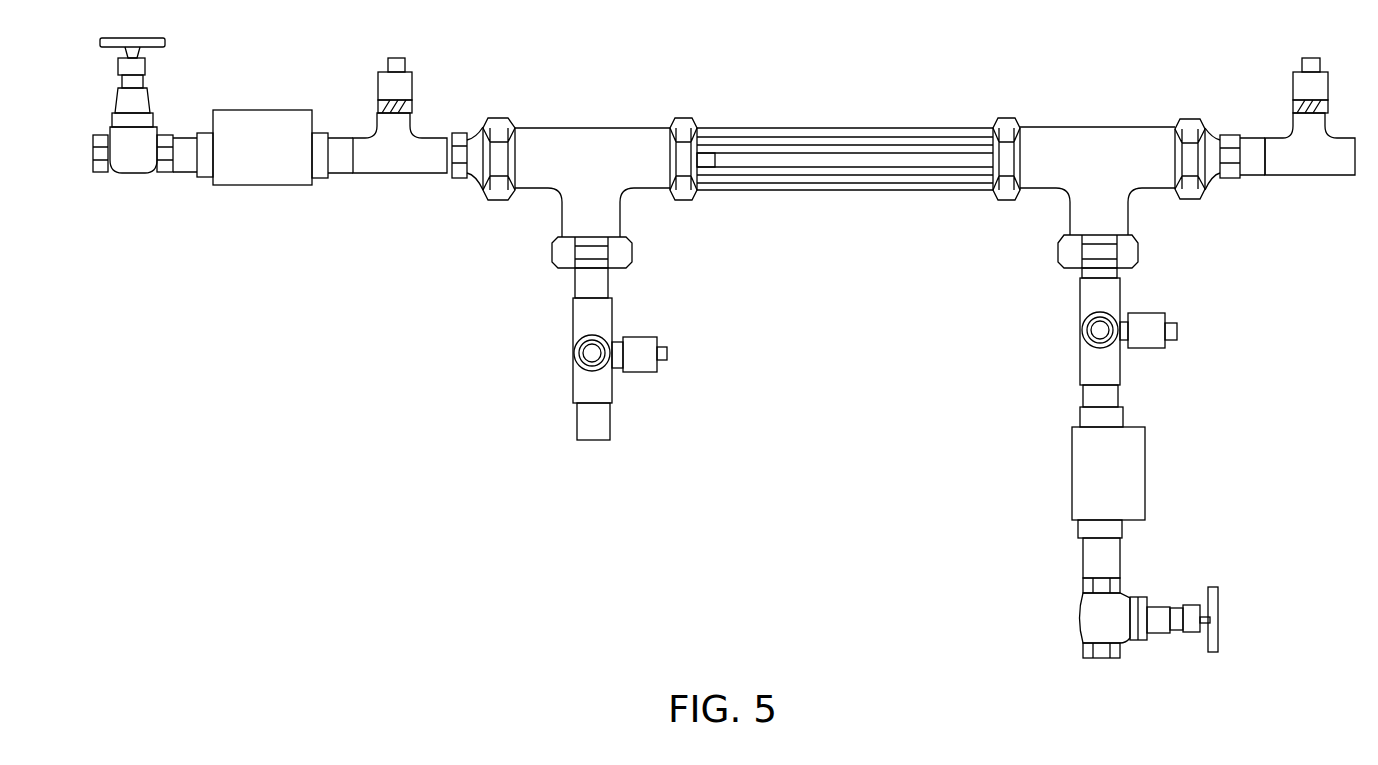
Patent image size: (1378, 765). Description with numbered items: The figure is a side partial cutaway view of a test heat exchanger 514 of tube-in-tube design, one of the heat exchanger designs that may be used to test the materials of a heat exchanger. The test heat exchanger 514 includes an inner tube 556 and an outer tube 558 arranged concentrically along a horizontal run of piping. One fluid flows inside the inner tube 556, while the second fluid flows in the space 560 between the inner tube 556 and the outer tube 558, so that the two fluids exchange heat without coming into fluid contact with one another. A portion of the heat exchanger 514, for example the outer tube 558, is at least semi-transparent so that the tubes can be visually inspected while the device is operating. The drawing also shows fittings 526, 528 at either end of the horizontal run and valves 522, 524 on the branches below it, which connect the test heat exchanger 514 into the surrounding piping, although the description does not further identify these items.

The test heat exchanger 514 is at (1007, 98).
The second needle valve 522 is at (1095, 270).
The first needle valve 524 is at (595, 278).
The first union fitting 526 is at (431, 147).
The second union fitting 528 is at (1252, 148).
The inner tube 556 is at (708, 183).
The outer tube 558 is at (757, 125).
The space 560 is at (898, 130).